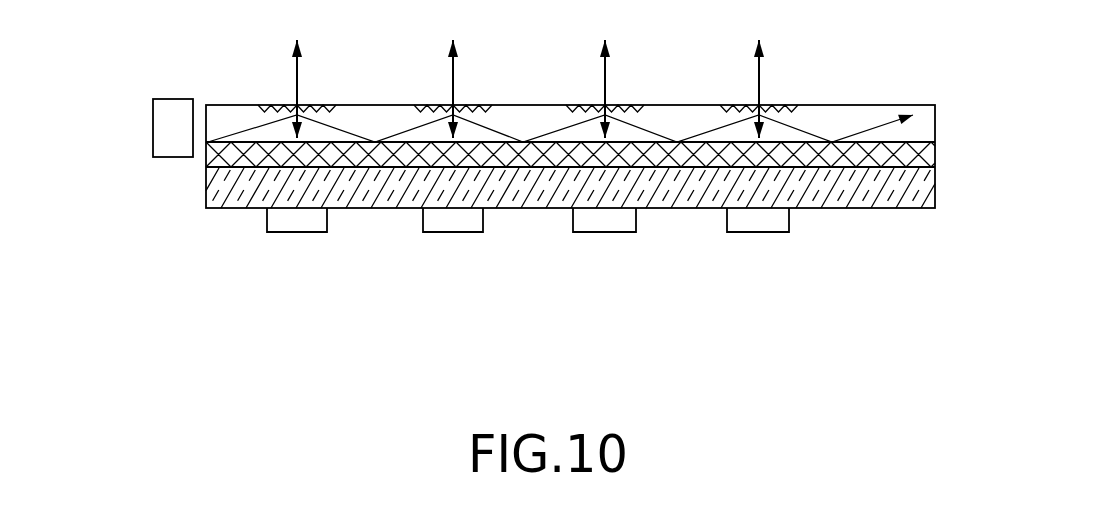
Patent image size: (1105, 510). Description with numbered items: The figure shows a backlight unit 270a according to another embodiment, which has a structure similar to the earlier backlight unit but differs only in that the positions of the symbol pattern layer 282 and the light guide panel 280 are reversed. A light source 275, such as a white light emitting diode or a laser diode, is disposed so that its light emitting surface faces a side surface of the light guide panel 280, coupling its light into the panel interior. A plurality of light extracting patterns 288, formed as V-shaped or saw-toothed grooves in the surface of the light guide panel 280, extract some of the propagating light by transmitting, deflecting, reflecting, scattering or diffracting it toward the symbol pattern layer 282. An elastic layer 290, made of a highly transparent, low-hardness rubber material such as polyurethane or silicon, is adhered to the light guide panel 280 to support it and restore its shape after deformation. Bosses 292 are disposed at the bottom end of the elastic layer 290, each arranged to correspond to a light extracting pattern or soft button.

The backlight unit 270a is at (508, 362).
The light source 275 is at (163, 130).
The light guide panel 280 is at (925, 123).
The symbol pattern layer 282 is at (928, 151).
The light extracting patterns 288 is at (795, 112).
The elastic layer 290 is at (960, 202).
The bosses 292 is at (760, 222).